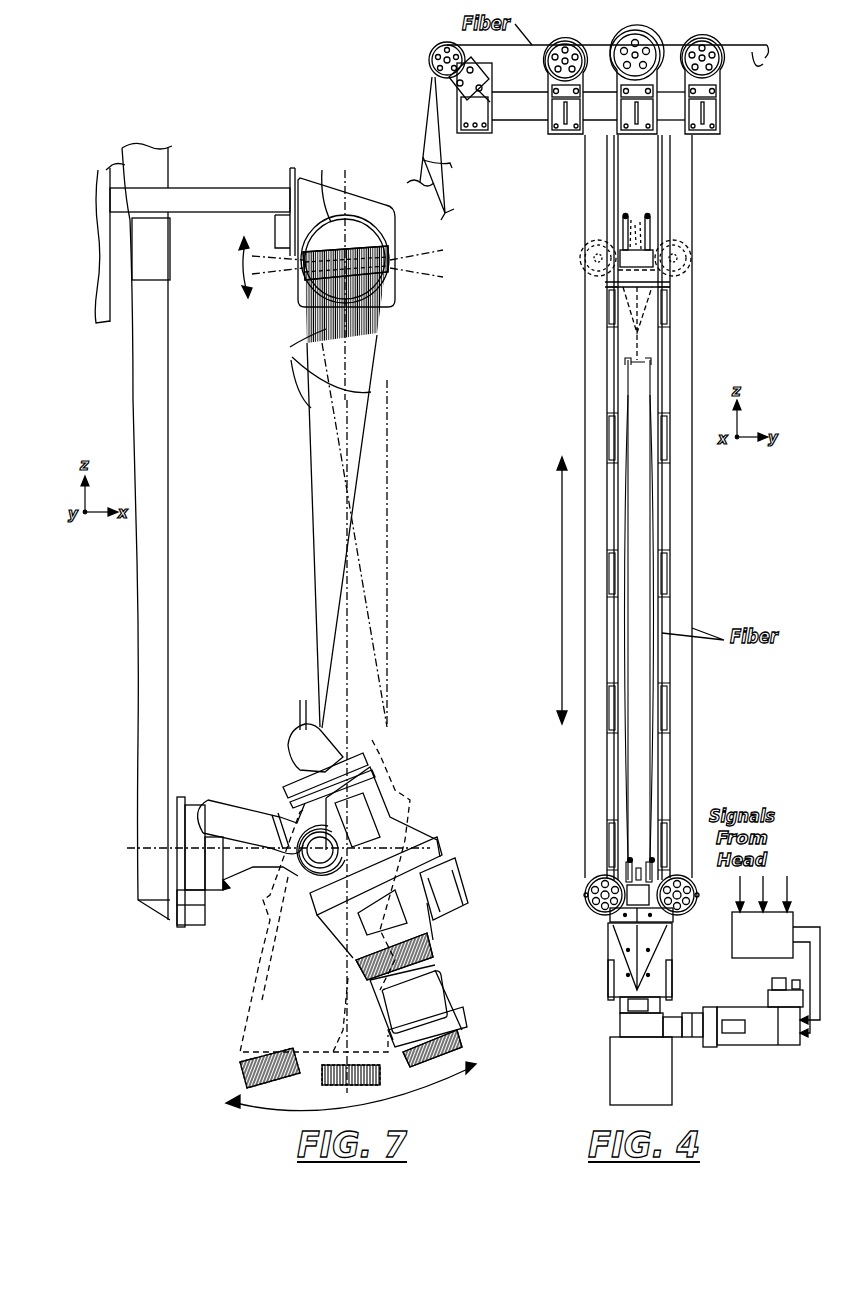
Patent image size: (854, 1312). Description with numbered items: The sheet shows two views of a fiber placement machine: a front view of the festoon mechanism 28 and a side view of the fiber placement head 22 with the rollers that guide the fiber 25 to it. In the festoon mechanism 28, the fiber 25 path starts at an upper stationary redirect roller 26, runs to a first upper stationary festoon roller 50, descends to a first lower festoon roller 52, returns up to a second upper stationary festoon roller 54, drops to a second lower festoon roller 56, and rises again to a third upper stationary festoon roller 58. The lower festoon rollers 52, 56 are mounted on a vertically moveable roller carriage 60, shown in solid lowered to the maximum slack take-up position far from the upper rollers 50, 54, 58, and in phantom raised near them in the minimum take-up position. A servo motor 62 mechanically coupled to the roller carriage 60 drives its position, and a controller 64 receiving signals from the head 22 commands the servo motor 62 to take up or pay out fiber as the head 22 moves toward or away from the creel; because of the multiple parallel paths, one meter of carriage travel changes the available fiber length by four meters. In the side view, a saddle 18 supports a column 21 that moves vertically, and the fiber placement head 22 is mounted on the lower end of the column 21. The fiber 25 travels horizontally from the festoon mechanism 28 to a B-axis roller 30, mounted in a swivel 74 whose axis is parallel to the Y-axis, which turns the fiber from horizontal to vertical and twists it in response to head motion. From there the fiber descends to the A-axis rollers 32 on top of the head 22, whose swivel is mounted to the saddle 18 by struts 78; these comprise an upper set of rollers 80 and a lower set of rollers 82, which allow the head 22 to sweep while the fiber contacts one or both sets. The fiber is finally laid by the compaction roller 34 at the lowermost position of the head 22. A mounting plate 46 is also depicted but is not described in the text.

In FIG. 7, the saddle 18 is at (110, 293).
In FIG. 7, the column 21 is at (157, 665).
In FIG. 7, the fiber placement head 22 is at (455, 890).
In FIG. 7, the fiber 25 is at (360, 576).
In FIG. 4, the fiber 25 is at (700, 183).
In FIG. 4, the upper stationary redirect roller 26 is at (445, 46).
In FIG. 4, the festoon mechanism 28 is at (664, 30).
In FIG. 7, the B-axis roller 30 is at (378, 294).
In FIG. 7, the A-axis rollers 32 is at (272, 730).
In FIG. 7, the compaction roller 34 is at (452, 1045).
In FIG. 7, the mounting plate 46 is at (285, 790).
In FIG. 4, the first upper stationary festoon roller 50 is at (572, 46).
In FIG. 4, the first lower festoon roller 52 is at (588, 242).
In FIG. 4, the second upper stationary festoon roller 54 is at (645, 46).
In FIG. 4, the second lower festoon roller 56 is at (686, 244).
In FIG. 4, the third upper stationary festoon roller 58 is at (710, 42).
In FIG. 4, the roller carriage 60 is at (650, 296).
In FIG. 4, the servo motor 62 is at (730, 1013).
In FIG. 4, the controller 64 is at (784, 918).
In FIG. 7, the swivel 74 is at (346, 271).
In FIG. 7, the struts 78 is at (222, 198).
In FIG. 7, the upper set of rollers 80 is at (300, 728).
In FIG. 7, the lower set of rollers 82 is at (326, 746).